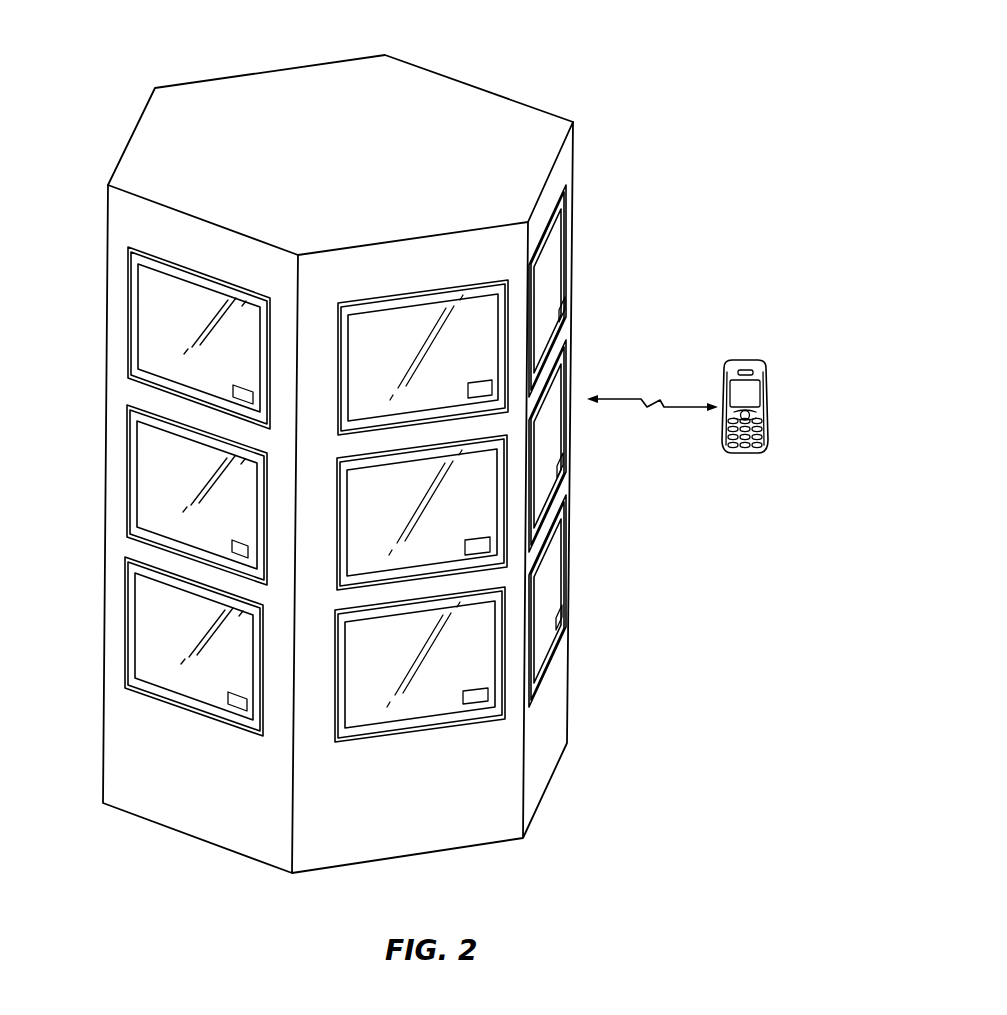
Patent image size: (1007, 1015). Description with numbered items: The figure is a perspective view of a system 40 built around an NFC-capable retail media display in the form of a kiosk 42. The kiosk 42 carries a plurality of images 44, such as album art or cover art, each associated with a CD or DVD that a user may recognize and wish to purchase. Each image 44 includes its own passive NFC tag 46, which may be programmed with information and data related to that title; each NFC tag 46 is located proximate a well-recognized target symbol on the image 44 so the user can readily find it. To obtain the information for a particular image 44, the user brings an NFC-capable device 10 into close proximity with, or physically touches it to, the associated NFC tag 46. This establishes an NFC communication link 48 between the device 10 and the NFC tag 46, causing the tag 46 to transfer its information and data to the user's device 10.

The NFC-capable device 10 is at (784, 375).
The system 40 is at (677, 78).
The kiosk 42 is at (265, 110).
The images 44 is at (190, 490).
The passive NFC tag 46 is at (248, 550).
The NFC communication link 48 is at (642, 398).